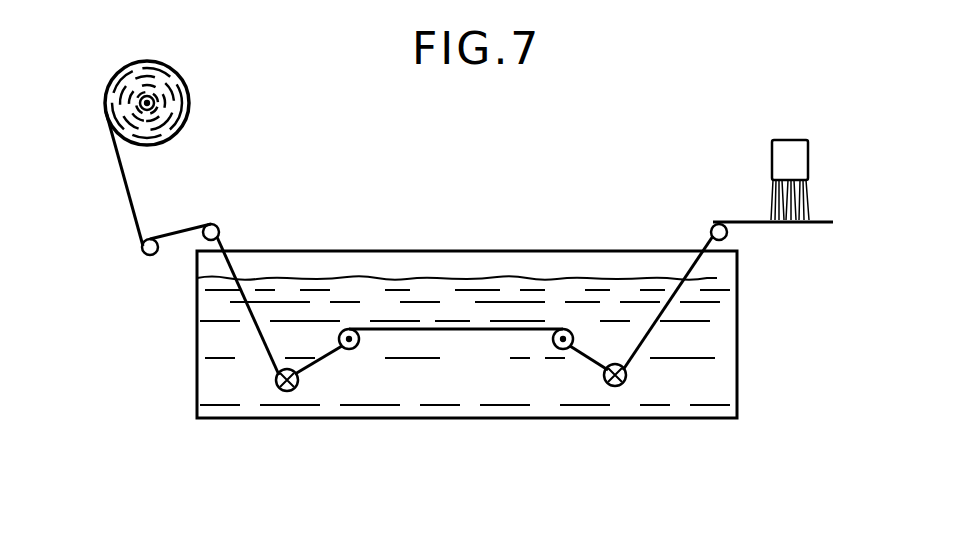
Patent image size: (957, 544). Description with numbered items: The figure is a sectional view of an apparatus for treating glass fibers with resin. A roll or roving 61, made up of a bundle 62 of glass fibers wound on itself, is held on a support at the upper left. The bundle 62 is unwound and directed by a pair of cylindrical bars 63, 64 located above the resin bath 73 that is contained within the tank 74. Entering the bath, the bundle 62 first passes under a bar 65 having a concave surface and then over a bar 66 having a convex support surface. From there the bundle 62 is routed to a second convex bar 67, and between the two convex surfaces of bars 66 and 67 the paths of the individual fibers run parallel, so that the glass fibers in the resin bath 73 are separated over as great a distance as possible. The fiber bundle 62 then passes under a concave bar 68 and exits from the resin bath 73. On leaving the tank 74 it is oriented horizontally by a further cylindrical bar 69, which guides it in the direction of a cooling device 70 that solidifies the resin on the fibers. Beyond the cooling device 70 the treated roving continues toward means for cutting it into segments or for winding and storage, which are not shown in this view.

The roving 61 is at (168, 92).
The bundle 62 is at (122, 172).
The cylindrical bar 63 is at (146, 254).
The cylindrical bar 64 is at (213, 225).
The bar 65 is at (288, 392).
The bar 66 is at (349, 328).
The second convex bar 67 is at (563, 328).
The concave bar 68 is at (613, 388).
The cylindrical bar 69 is at (728, 236).
The cooling device 70 is at (788, 165).
The resin bath 73 is at (446, 400).
The tank 74 is at (197, 358).